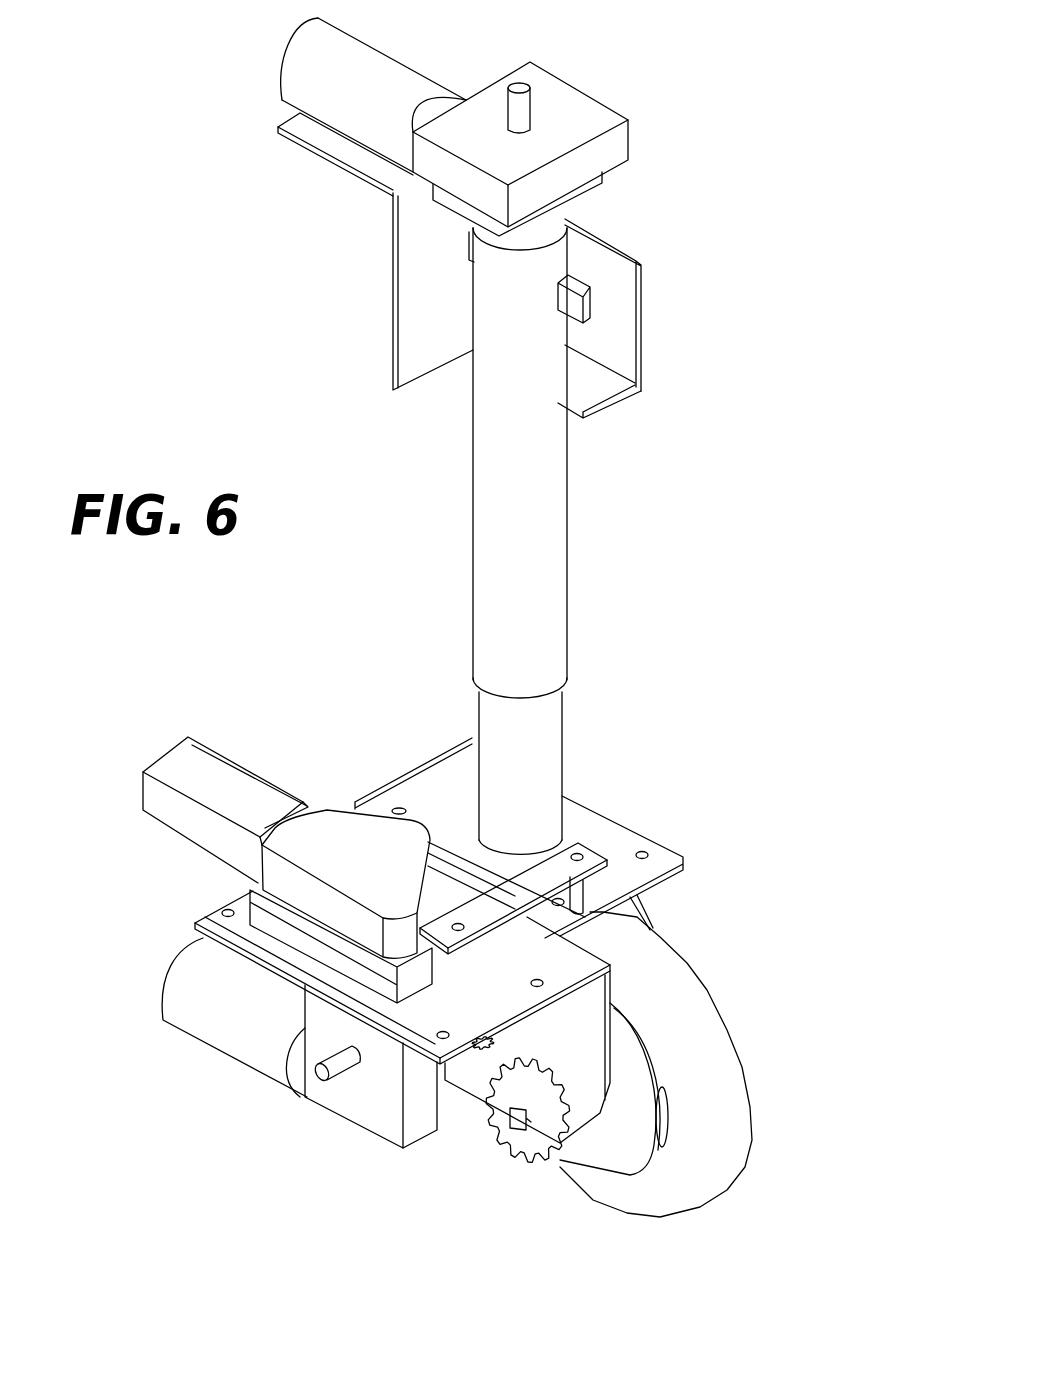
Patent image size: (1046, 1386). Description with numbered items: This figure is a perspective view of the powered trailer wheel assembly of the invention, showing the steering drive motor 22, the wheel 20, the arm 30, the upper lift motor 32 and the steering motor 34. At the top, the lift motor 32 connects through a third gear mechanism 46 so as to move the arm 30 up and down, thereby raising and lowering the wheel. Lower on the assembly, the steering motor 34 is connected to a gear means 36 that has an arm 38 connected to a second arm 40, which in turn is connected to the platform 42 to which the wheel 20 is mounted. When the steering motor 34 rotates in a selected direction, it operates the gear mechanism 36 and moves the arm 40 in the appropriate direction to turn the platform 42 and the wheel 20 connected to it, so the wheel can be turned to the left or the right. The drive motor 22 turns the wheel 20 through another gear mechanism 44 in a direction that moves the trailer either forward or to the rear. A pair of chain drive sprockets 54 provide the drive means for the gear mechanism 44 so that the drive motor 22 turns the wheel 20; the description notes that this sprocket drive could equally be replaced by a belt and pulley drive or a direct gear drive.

The wheel 20 is at (725, 1075).
The steering drive motor 22 is at (237, 1017).
The arm 30 is at (530, 578).
The upper lift motor 32 is at (298, 80).
The steering motor 34 is at (237, 780).
The gear means 36 is at (337, 818).
The arm 38 is at (427, 870).
The second arm 40 is at (618, 898).
The platform 42 is at (593, 827).
The gear mechanism 44 is at (372, 1120).
The third gear mechanism 46 is at (592, 113).
The chain drive sprockets 54 is at (530, 1147).